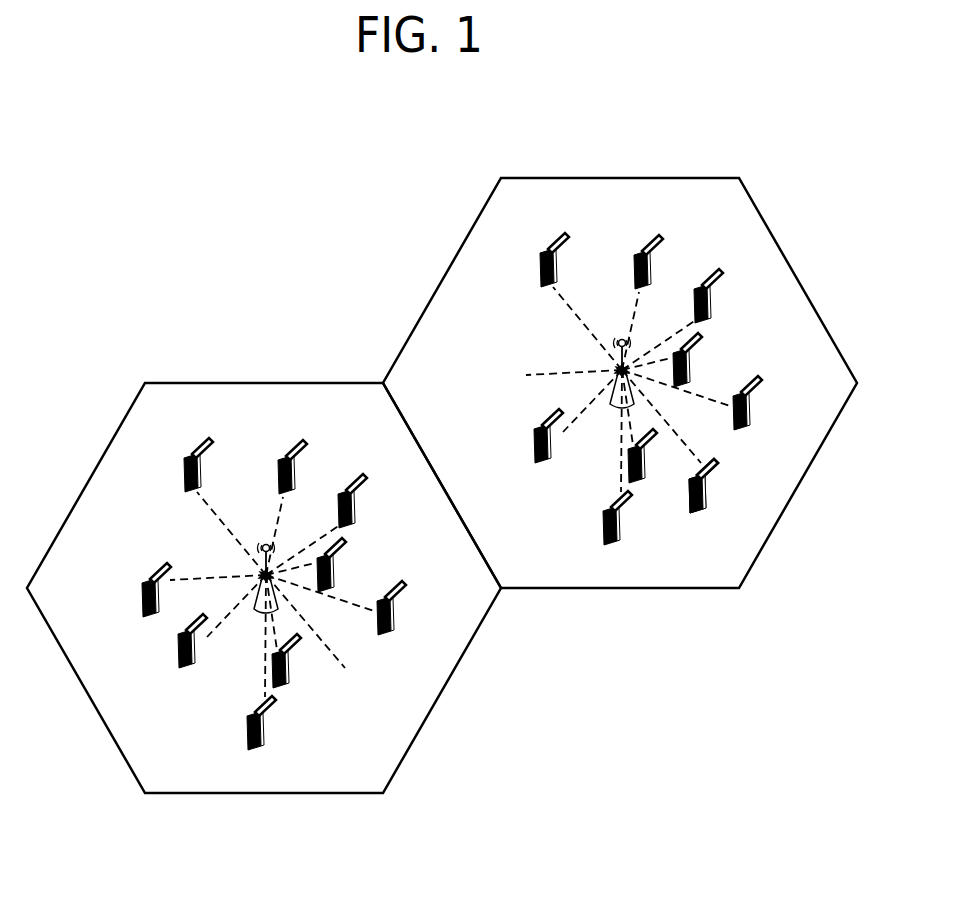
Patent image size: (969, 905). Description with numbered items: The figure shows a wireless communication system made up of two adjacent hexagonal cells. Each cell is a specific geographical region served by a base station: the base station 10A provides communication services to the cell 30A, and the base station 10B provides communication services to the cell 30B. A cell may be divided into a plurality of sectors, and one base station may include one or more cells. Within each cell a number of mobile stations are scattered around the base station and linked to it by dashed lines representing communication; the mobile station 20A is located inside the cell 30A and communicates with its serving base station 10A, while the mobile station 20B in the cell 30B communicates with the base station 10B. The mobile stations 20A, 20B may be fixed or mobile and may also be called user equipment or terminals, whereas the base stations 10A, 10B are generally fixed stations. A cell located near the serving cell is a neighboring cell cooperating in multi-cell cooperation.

The base station 10A is at (253, 614).
The base station 10B is at (611, 398).
The mobile station 20A is at (147, 580).
The mobile station 20B is at (705, 498).
The cell 30A is at (267, 383).
The cell 30B is at (653, 178).